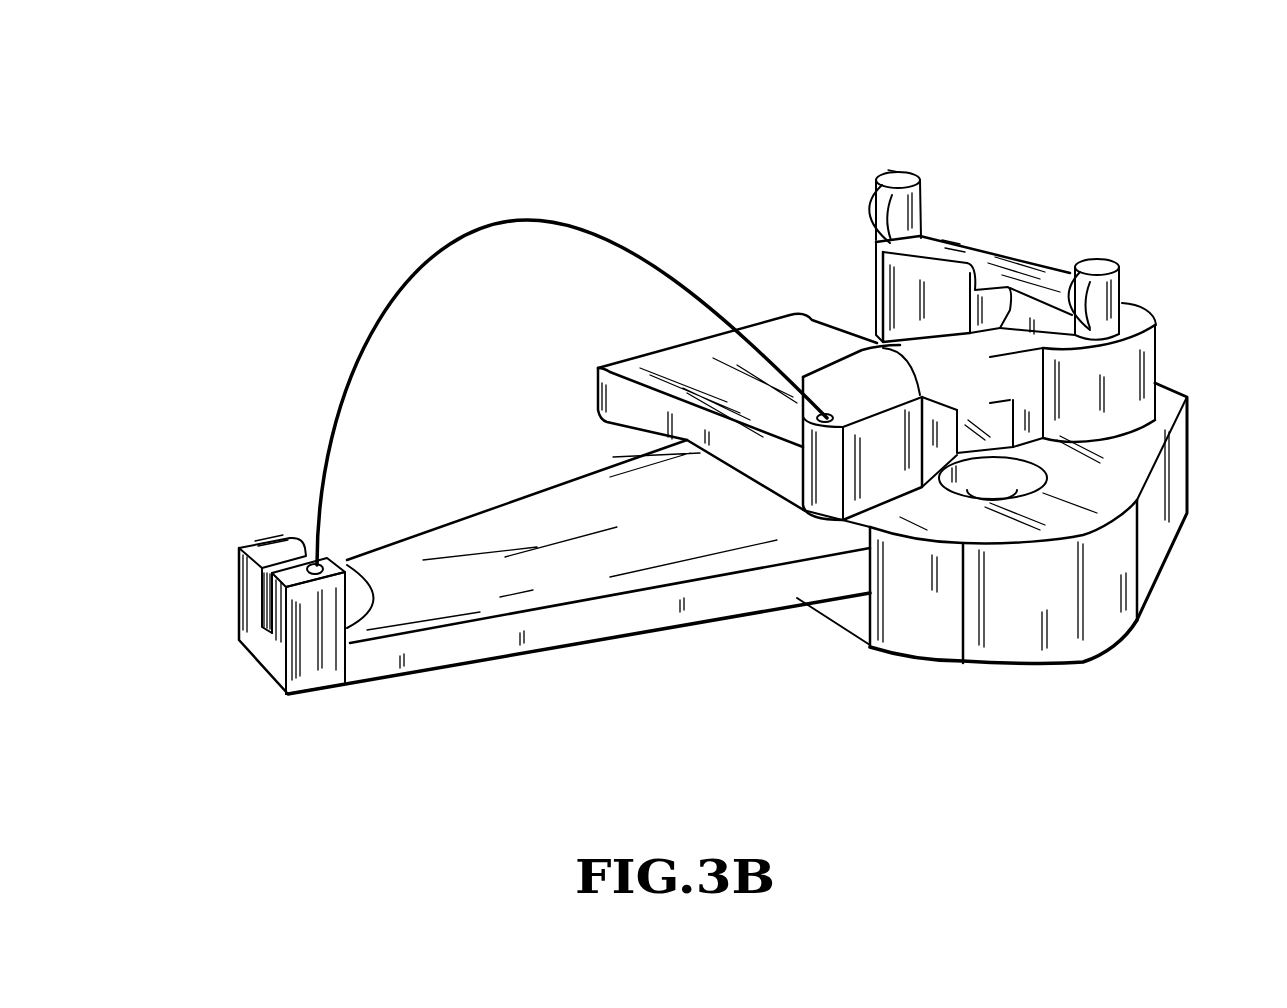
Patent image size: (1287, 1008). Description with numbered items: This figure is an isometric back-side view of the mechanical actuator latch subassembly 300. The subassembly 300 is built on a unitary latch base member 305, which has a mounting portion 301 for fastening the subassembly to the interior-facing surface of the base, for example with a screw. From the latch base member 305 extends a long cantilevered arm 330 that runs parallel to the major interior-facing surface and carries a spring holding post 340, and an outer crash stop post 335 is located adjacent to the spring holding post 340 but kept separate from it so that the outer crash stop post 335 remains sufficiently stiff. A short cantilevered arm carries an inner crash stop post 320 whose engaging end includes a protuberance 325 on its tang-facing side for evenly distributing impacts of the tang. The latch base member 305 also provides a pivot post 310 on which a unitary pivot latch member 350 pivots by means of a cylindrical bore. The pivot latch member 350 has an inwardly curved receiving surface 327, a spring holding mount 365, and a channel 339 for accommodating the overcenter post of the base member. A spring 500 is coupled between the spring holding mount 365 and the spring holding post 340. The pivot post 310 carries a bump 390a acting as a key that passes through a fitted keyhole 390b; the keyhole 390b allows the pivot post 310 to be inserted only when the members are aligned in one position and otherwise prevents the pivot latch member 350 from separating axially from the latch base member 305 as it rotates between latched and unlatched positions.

The subassembly 300 is at (565, 104).
The mounting portion 301 is at (1068, 480).
The unitary latch base member 305 is at (1148, 560).
The pivot post 310 is at (1125, 273).
The inner crash stop post 320 is at (923, 186).
The protuberance 325 is at (868, 206).
The receiving surface 327 is at (948, 295).
The long cantilevered arm 330 is at (537, 500).
The outer crash stop post 335 is at (252, 577).
The channel 339 is at (984, 427).
The spring holding post 340 is at (330, 566).
The unitary pivot latch member 350 is at (1003, 257).
The spring holding mount 365 is at (869, 474).
The bump 390a is at (1070, 273).
The keyhole 390b is at (1127, 308).
The spring 500 is at (423, 254).